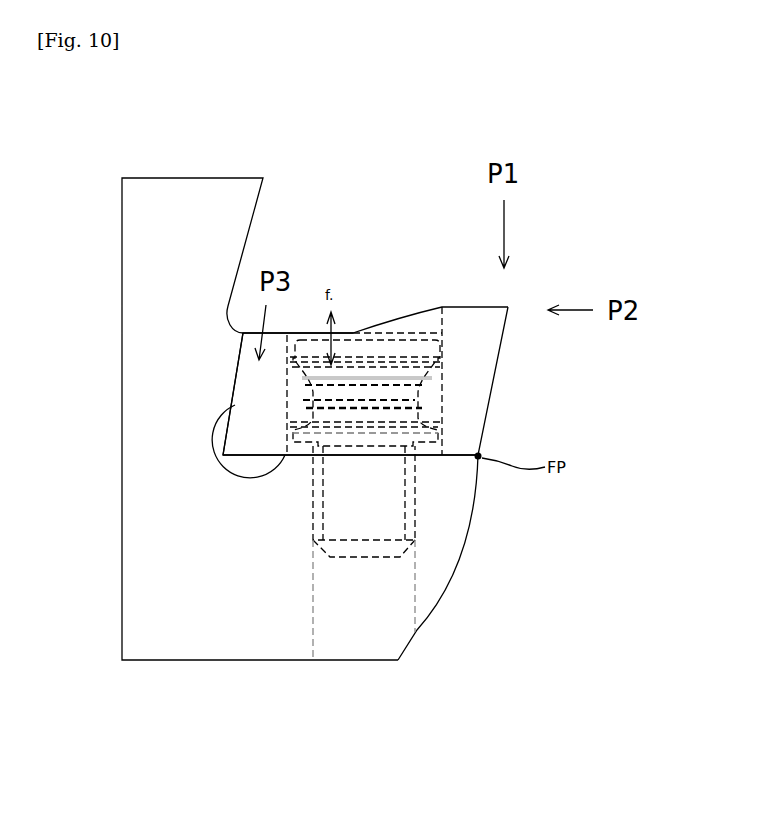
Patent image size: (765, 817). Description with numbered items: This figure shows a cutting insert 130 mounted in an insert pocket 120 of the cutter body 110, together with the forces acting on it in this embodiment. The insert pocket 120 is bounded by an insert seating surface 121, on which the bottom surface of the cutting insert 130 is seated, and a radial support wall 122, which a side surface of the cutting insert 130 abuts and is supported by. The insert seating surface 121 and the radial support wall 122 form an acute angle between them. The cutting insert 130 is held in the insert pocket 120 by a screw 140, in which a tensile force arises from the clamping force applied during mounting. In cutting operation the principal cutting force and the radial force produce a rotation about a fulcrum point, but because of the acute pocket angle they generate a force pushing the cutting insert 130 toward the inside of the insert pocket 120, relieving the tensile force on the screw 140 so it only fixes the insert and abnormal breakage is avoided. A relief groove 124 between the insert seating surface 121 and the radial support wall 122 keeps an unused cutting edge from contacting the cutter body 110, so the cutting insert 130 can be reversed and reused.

The cutter body 110 is at (188, 165).
The insert pocket 120 is at (508, 403).
The insert seating surface 121 is at (291, 456).
The radial support wall 122 is at (236, 370).
The relief groove 124 is at (232, 470).
The cutting insert 130 is at (452, 316).
The screw 140 is at (367, 558).